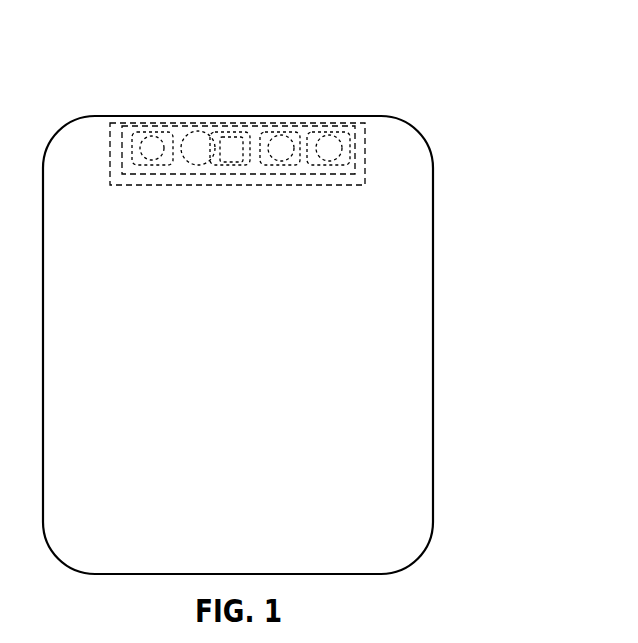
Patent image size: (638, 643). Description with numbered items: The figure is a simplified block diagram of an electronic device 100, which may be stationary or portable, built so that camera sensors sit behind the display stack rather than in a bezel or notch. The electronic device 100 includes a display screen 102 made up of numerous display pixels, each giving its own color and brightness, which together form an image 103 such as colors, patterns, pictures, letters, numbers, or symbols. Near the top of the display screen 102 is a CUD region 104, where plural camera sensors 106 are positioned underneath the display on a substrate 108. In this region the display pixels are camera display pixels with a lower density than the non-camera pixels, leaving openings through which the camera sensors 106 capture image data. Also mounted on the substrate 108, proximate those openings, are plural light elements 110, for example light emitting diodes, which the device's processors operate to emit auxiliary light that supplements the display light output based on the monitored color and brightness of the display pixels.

The electronic device 100 is at (280, 293).
The display screen 102 is at (388, 382).
The image 103 is at (283, 296).
The CUD region 104 is at (365, 178).
The camera sensors 106 is at (143, 150).
The substrate 108 is at (160, 138).
The light elements 110 is at (175, 135).